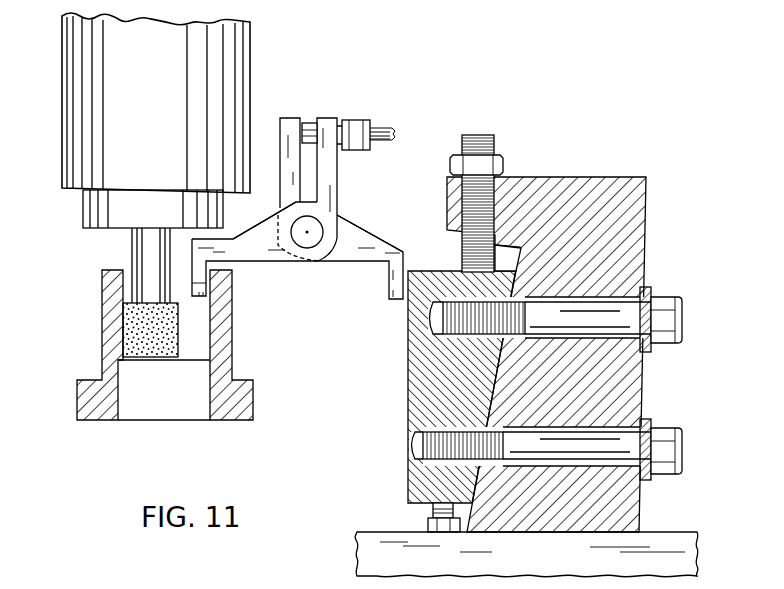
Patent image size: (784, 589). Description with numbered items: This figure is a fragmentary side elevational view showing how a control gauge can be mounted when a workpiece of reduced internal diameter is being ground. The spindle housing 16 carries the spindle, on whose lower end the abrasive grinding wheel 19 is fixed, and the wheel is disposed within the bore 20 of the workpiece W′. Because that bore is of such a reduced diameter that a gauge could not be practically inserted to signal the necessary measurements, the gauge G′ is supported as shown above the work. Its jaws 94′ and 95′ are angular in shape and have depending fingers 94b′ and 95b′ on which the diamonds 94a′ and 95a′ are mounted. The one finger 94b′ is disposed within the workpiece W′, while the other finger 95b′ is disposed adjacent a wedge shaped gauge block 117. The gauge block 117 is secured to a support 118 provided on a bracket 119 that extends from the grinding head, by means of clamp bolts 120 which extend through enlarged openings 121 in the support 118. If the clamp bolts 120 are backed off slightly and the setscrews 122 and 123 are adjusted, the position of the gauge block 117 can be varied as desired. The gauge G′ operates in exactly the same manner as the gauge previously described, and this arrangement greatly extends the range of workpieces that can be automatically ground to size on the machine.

The spindle housing 16 is at (159, 134).
The abrasive grinding wheel 19 is at (128, 329).
The bore 20 is at (207, 334).
The workpiece W′ is at (232, 346).
The jaw 94′ is at (250, 250).
The diamond 94a′ is at (232, 300).
The depending finger 94b′ is at (232, 278).
The jaw 95′ is at (368, 240).
The diamond 95a′ is at (403, 299).
The depending finger 95b′ is at (395, 280).
The gauge G′ is at (330, 186).
The gauge block 117 is at (418, 347).
The support 118 is at (636, 369).
The bracket 119 is at (372, 555).
The clamp bolts 120 is at (668, 302).
The enlarged openings 121 is at (643, 289).
The setscrew 122 is at (468, 249).
The setscrew 123 is at (433, 511).